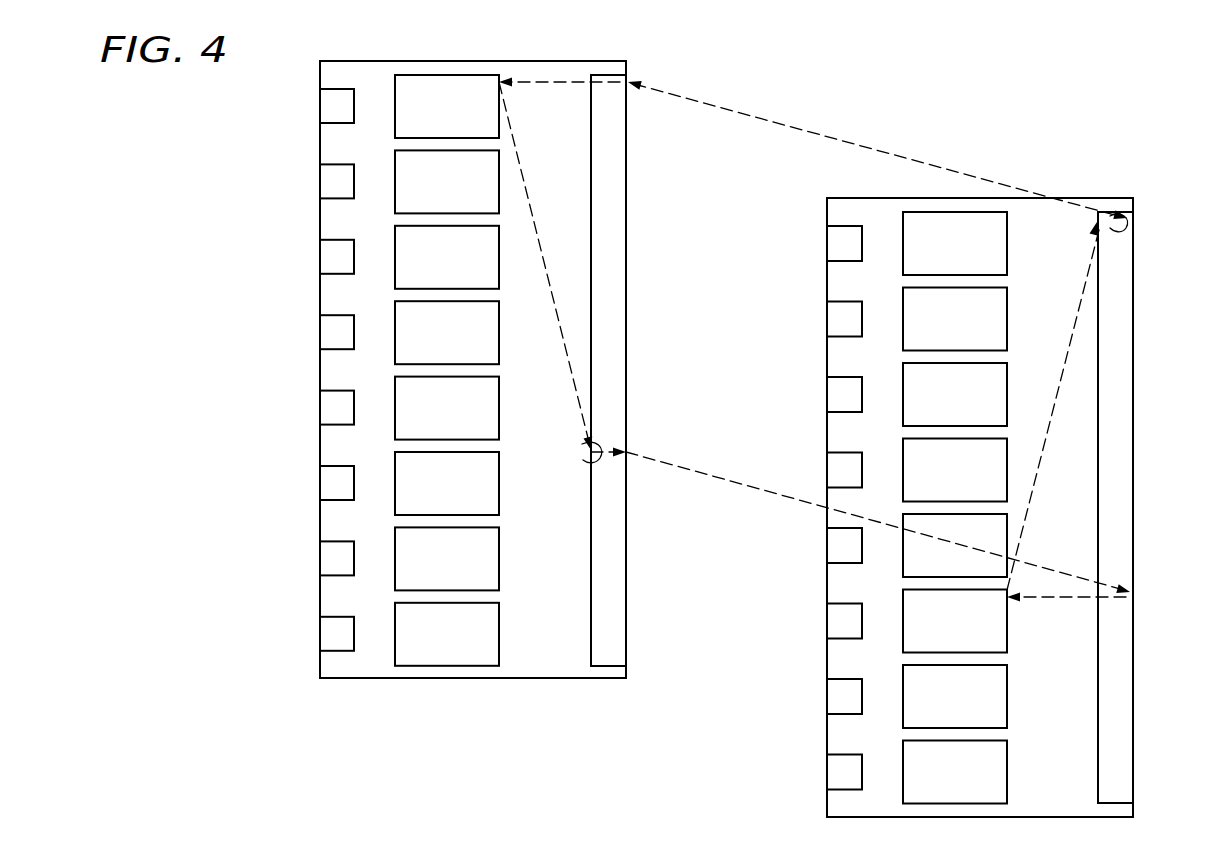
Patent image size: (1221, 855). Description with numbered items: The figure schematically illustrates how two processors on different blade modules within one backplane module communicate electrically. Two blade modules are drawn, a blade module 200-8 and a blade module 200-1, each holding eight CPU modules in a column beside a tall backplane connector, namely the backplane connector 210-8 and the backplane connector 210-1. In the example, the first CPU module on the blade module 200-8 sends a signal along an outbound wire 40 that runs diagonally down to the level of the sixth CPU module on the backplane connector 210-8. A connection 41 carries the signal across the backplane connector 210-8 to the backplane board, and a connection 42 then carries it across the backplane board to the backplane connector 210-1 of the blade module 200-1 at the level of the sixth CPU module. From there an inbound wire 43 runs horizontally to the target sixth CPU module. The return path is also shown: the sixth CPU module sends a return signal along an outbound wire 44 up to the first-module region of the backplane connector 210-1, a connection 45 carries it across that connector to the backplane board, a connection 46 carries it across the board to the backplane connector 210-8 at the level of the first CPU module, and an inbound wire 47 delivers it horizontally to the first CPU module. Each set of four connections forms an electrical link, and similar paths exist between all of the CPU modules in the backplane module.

The blade module 200-8 is at (474, 679).
The backplane connector 210-8 is at (619, 273).
The blade module 200-1 is at (1092, 198).
The backplane connector 210-1 is at (1124, 413).
The outbound wire 40 is at (523, 186).
The connection 41 is at (588, 462).
The connection 42 is at (713, 479).
The inbound wire 43 is at (1067, 598).
The outbound wire 44 is at (1076, 314).
The connection 45 is at (1128, 226).
The connection 46 is at (853, 143).
The inbound wire 47 is at (552, 80).